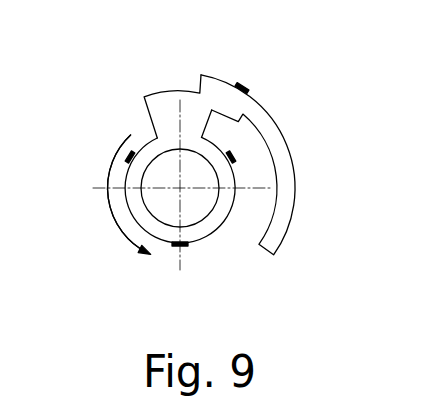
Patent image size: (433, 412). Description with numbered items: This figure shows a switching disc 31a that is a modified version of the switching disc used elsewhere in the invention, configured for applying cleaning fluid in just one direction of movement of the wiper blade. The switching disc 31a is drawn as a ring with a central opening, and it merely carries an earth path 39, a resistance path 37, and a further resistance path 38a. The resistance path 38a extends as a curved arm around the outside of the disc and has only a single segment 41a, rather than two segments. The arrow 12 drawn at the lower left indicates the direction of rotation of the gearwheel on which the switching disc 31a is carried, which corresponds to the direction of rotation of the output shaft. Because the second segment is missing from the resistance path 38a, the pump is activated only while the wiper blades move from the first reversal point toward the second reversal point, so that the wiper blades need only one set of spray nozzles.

The arrow 12 is at (120, 232).
The switching disc 31a is at (104, 212).
The resistance path 37 is at (191, 130).
The resistance path 38a is at (294, 161).
The earth path 39 is at (220, 208).
The segment 41a is at (322, 95).